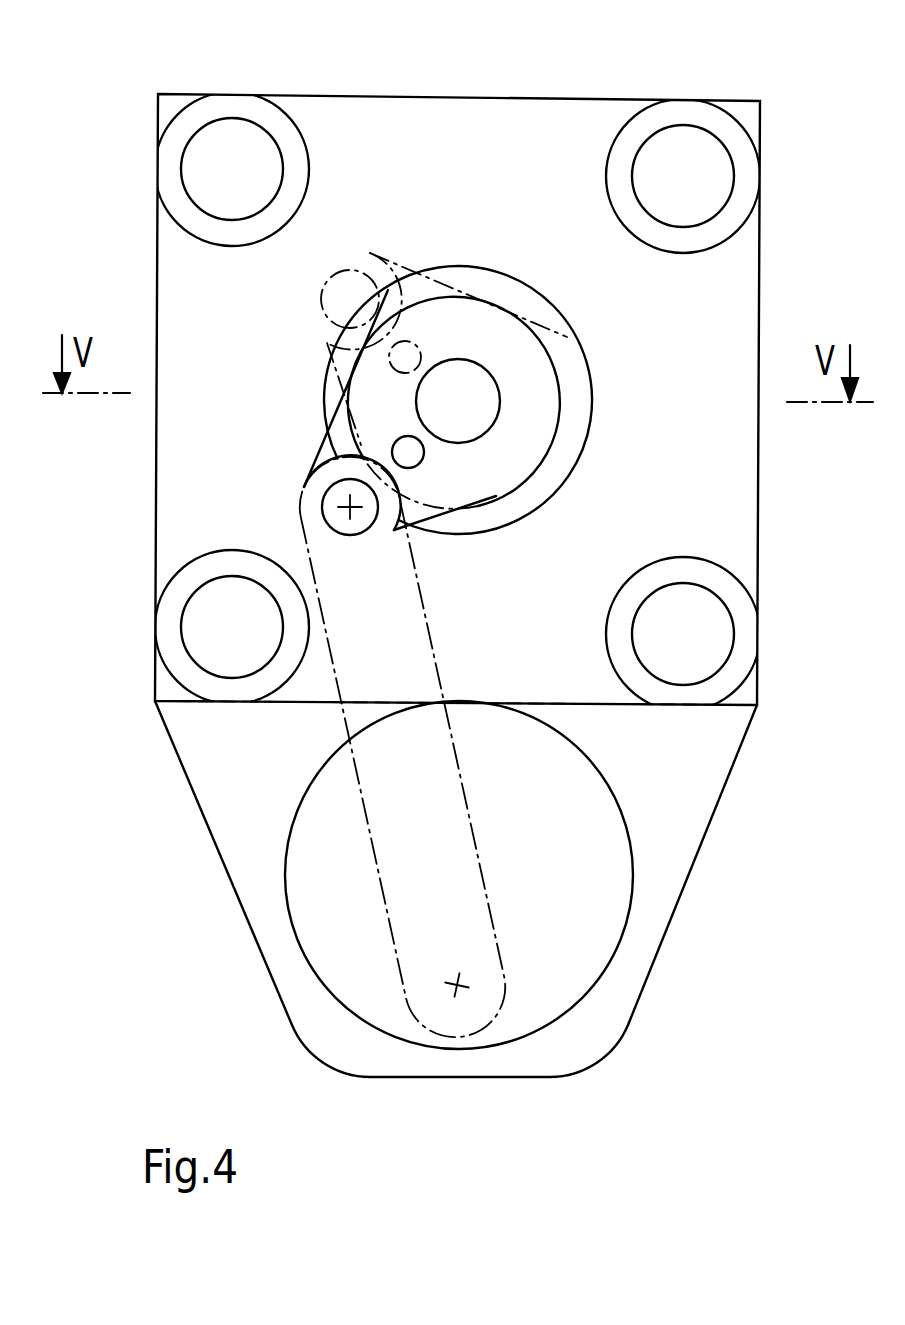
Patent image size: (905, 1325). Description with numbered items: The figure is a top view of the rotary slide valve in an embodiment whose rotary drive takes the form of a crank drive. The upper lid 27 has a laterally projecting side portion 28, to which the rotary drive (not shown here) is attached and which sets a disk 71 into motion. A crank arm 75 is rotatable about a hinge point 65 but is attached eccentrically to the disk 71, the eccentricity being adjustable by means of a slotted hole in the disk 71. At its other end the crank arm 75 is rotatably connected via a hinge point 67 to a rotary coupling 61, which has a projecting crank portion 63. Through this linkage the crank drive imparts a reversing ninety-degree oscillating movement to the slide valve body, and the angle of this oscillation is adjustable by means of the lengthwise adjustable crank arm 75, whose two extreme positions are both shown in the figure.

The upper lid 27 is at (532, 118).
The side portion 28 is at (692, 803).
The rotary coupling 61 is at (482, 323).
The crank portion 63 is at (320, 464).
The hinge point 65 is at (456, 992).
The hinge point 67 is at (346, 509).
The disk 71 is at (613, 888).
The crank arm 75 is at (408, 610).